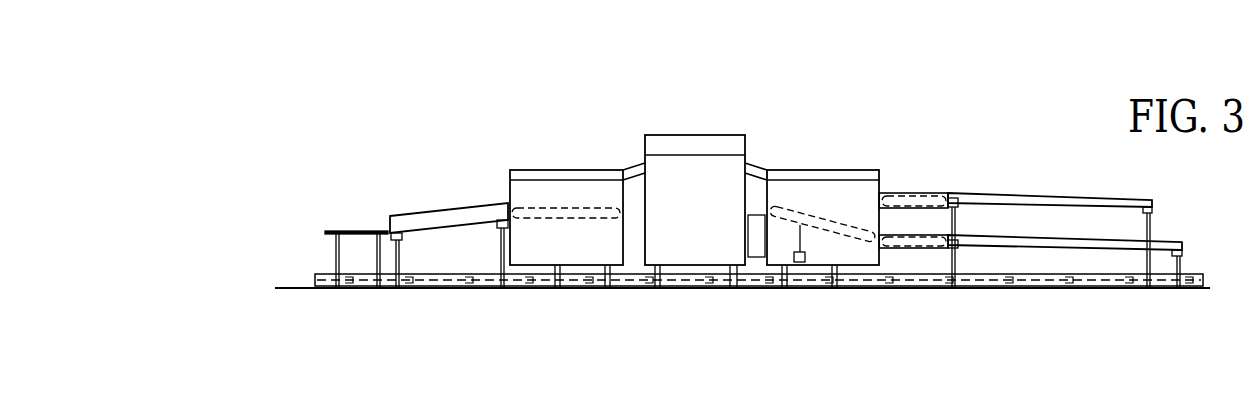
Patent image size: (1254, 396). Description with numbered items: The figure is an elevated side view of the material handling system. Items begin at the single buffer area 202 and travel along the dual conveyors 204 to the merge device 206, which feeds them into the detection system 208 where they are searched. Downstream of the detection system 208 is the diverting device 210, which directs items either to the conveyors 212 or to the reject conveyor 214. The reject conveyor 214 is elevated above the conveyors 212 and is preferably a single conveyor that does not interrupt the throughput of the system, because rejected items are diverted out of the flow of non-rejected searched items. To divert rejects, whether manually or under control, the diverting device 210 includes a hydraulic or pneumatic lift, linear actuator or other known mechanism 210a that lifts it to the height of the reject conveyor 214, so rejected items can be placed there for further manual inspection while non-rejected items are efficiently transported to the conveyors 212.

The single buffer area 202 is at (358, 231).
The dual conveyors 204 is at (437, 214).
The merge device 206 is at (570, 204).
The detection system 208 is at (672, 129).
The diverting device 210 is at (817, 211).
The lift mechanism 210a is at (795, 262).
The conveyors 212 is at (1028, 249).
The reject conveyor 214 is at (1010, 189).